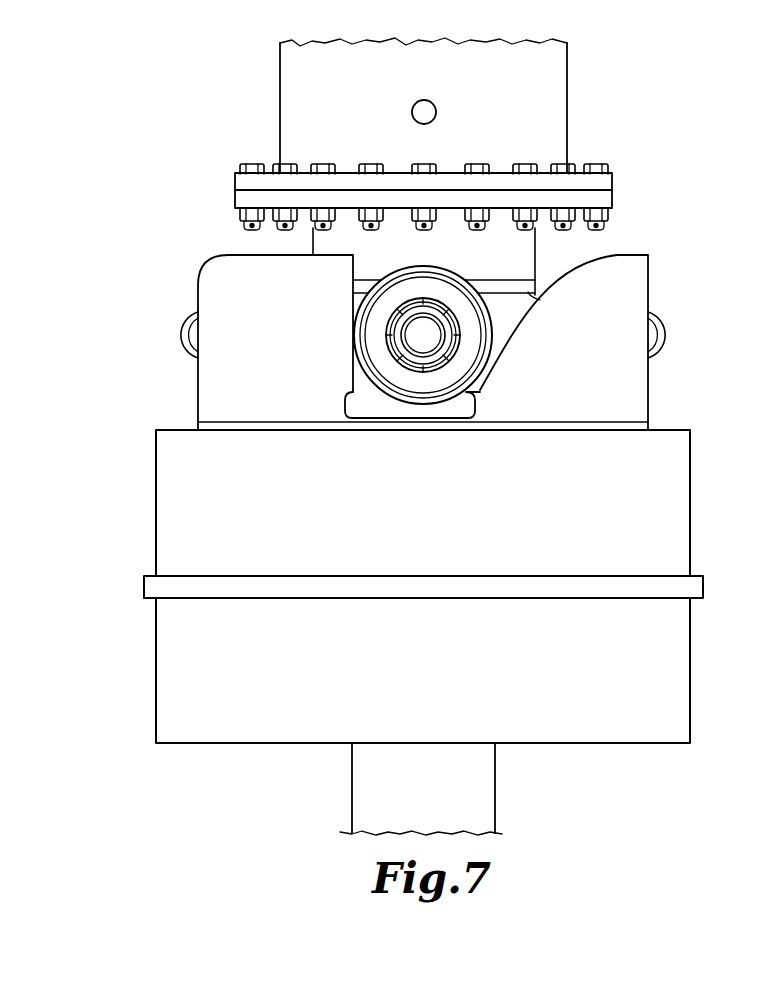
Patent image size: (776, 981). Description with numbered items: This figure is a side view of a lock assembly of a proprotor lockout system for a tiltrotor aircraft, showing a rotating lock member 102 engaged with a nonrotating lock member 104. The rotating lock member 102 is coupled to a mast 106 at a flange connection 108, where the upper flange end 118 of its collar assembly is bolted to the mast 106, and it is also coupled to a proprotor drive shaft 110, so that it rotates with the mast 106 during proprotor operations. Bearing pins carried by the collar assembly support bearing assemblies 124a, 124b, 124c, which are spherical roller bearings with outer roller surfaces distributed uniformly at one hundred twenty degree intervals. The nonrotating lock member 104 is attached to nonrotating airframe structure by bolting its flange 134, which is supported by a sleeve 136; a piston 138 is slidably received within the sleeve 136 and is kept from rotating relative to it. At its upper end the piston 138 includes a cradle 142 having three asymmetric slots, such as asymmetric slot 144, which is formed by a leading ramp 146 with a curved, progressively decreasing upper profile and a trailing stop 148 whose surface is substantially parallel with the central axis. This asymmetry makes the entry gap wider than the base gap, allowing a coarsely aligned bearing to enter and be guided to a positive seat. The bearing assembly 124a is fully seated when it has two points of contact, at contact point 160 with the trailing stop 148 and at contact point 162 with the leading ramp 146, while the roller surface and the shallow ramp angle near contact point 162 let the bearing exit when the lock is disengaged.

The rotating lock member 102 is at (313, 245).
The nonrotating lock member 104 is at (677, 510).
The mast 106 is at (557, 77).
The flange connection 108 is at (612, 183).
The proprotor drive shaft 110 is at (480, 795).
The upper flange end 118 is at (612, 196).
The bearing assembly 124a is at (423, 388).
The bearing assembly 124b is at (665, 335).
The bearing assembly 124c is at (185, 335).
The flange 134 is at (695, 585).
The sleeve 136 is at (677, 695).
The piston 138 is at (638, 385).
The cradle 142 is at (205, 382).
The asymmetric slot 144 is at (567, 272).
The leading ramp 146 is at (533, 303).
The trailing stop 148 is at (353, 284).
The contact point 160 is at (353, 335).
The contact point 162 is at (487, 372).